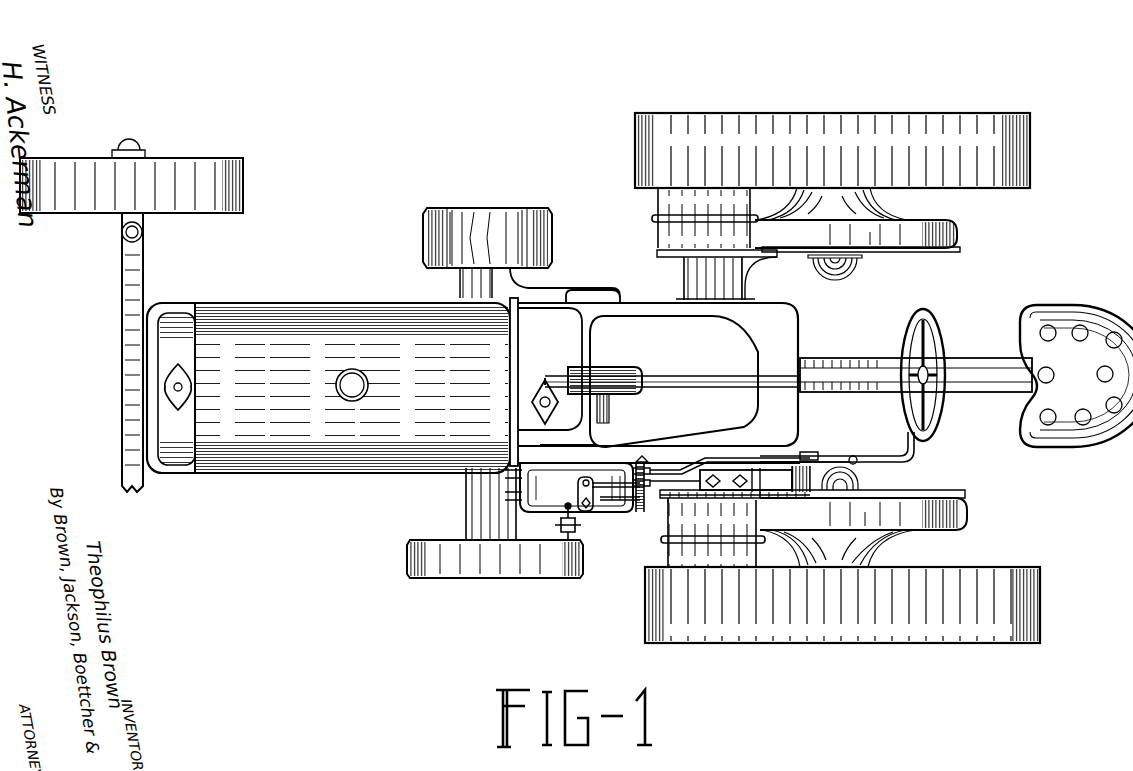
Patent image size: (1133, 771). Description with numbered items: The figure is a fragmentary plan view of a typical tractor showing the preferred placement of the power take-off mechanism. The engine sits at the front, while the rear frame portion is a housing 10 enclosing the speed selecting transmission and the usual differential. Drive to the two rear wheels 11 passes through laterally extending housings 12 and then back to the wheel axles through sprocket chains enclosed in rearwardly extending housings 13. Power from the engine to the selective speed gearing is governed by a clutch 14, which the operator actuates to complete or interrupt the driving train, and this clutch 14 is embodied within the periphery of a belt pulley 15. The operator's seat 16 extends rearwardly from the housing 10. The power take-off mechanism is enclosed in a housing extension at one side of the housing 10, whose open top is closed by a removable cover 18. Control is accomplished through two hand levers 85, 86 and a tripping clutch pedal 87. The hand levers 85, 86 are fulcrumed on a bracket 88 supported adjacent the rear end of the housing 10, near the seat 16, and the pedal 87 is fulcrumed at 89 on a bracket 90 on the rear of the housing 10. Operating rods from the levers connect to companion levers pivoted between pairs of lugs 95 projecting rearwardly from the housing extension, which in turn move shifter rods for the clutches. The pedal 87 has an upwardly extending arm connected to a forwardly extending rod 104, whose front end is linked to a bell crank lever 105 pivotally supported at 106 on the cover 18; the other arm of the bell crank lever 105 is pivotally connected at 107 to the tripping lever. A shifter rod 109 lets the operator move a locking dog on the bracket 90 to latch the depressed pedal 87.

The housing 10 is at (653, 308).
The rear wheels 11 is at (645, 126).
The laterally extending housings 12 is at (746, 282).
The rearwardly extending housings 13 is at (960, 237).
The clutch 14 is at (486, 206).
The belt pulley 15 is at (436, 229).
The operator's seat 16 is at (1070, 420).
The removable cover 18 is at (652, 496).
The hand lever 85 is at (797, 468).
The hand lever 86 is at (778, 498).
The tripping clutch pedal 87 is at (904, 462).
The bracket 88 is at (766, 476).
The fulcrum 89 is at (806, 452).
The bracket 90 is at (812, 458).
The lugs 95 is at (642, 462).
The forwardly extending rod 104 is at (680, 466).
The bell crank lever 105 is at (594, 492).
The pivot 106 is at (588, 510).
The pivotal connection 107 is at (556, 527).
The shifter rod 109 is at (855, 456).